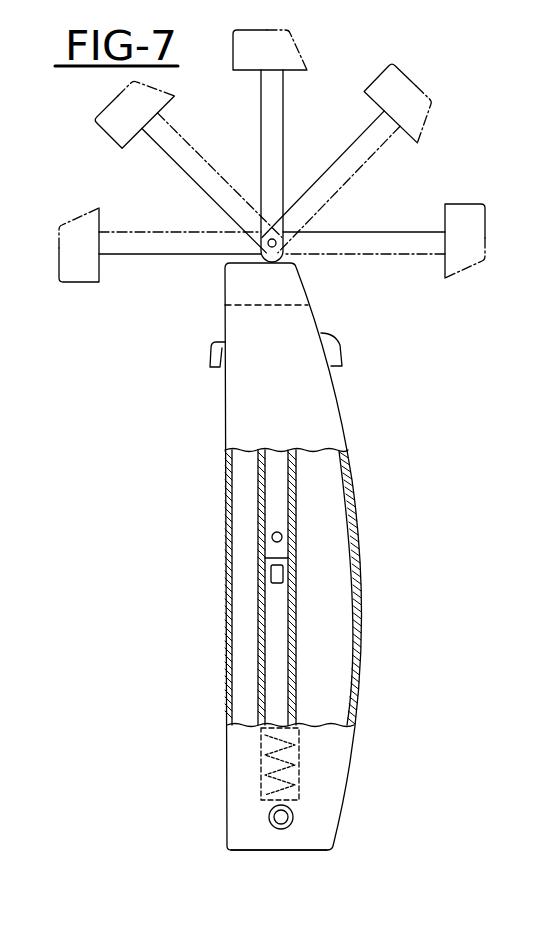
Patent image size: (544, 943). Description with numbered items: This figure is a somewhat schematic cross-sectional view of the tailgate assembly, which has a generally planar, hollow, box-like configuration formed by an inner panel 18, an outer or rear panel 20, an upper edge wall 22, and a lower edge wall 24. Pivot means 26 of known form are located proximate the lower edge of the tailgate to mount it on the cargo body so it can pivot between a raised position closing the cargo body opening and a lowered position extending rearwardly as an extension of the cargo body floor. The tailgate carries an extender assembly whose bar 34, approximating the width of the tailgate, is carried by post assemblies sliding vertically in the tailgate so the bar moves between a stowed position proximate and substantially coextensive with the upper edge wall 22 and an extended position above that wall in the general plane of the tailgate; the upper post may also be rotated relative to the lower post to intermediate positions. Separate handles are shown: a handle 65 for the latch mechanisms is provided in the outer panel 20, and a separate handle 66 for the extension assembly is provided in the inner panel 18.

The inner panel 18 is at (226, 558).
The outer panel 20 is at (356, 541).
The upper edge wall 22 is at (243, 259).
The lower edge wall 24 is at (262, 850).
The pivot means 26 is at (293, 822).
The bar 34 is at (291, 40).
The handle 65 is at (343, 354).
The handle 66 is at (210, 357).